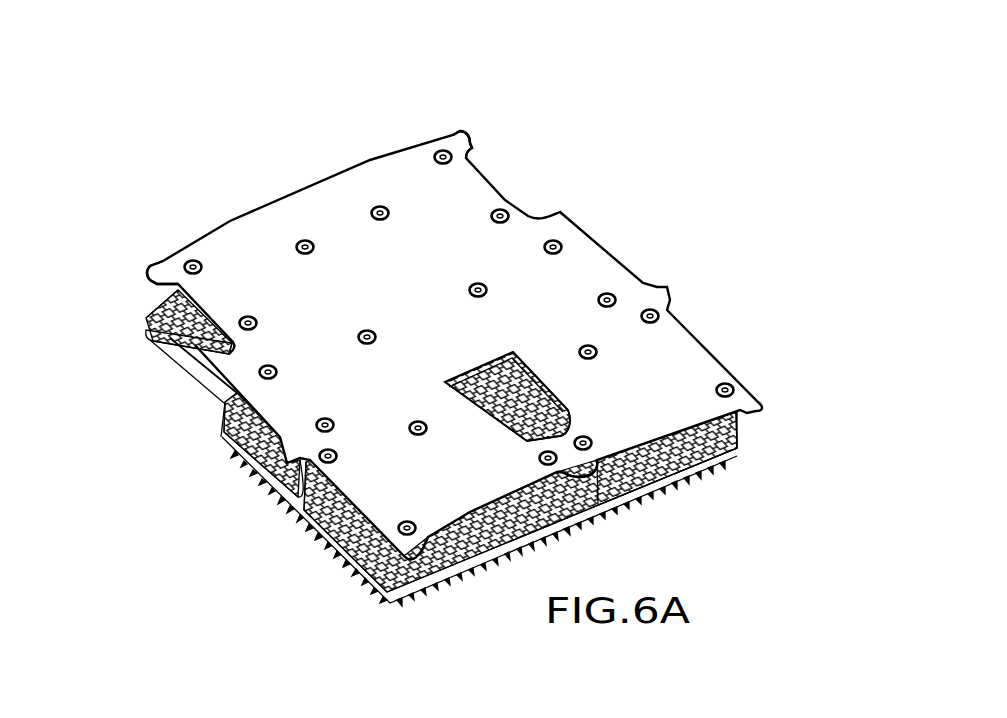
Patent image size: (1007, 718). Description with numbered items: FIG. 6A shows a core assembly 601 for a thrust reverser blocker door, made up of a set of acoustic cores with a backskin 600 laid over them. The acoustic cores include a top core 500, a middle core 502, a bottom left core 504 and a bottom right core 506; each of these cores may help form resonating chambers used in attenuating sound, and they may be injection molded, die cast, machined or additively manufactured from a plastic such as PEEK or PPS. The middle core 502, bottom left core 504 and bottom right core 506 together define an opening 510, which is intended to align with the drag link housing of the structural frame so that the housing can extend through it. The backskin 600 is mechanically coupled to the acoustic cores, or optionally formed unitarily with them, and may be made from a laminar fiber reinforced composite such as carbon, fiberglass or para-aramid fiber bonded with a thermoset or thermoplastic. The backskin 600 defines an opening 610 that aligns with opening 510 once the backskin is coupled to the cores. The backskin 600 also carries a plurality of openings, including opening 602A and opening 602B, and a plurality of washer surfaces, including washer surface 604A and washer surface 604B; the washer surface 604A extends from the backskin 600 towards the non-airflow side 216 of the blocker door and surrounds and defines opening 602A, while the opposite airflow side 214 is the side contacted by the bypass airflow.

The core assembly 601 is at (701, 88).
The backskin 600 is at (565, 212).
The opening 602A is at (195, 260).
The opening 602B is at (440, 153).
The washer surface 604A is at (150, 260).
The washer surface 604B is at (454, 133).
The top core 500 is at (146, 326).
The non-airflow side 216 is at (222, 410).
The middle core 502 is at (227, 447).
The bottom left core 504 is at (390, 606).
The bottom right core 506 is at (741, 459).
The opening 510 is at (560, 475).
The airflow side 214 is at (262, 492).
The opening 610 is at (517, 425).